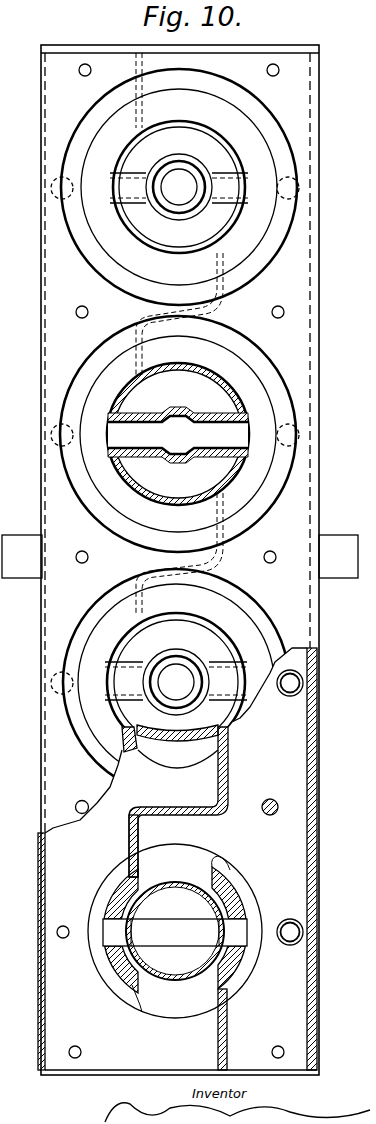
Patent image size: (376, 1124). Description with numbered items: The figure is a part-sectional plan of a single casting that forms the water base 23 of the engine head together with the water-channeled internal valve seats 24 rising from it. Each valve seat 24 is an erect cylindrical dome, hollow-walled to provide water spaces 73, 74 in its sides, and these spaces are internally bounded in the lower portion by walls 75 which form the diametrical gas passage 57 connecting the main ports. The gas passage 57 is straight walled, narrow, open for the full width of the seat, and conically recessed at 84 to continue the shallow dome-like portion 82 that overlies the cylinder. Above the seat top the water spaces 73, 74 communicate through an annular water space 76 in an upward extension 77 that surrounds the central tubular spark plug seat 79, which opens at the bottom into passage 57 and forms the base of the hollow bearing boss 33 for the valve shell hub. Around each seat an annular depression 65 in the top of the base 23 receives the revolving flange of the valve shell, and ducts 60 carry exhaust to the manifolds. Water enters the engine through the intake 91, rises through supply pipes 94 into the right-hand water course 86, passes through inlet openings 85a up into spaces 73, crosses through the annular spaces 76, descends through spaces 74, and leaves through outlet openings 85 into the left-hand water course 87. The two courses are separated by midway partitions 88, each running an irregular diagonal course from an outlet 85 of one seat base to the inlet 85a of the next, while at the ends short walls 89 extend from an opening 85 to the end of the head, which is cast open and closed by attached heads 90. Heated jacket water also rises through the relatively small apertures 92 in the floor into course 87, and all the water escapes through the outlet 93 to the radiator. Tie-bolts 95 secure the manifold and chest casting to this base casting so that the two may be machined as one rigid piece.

The water base 23 is at (313, 1035).
The valve seat 24 is at (240, 378).
The bearing boss 33 is at (199, 213).
The gas passage 57 is at (136, 203).
The exhaust duct 60 is at (110, 436).
The annular depression 65 is at (262, 104).
The water space 73 is at (244, 893).
The water space 74 is at (92, 984).
The wall 75 is at (222, 704).
The annular water space 76 is at (244, 183).
The upward extension 77 is at (118, 220).
The spark plug seat 79 is at (190, 172).
The dome-like portion 82 is at (124, 872).
The conical recess 84 is at (176, 881).
The water outlet opening 85 is at (128, 490).
The water inlet opening 85a is at (215, 858).
The right-hand water course 86 is at (310, 267).
The left-hand water course 87 is at (45, 299).
The midway partition 88 is at (133, 329).
The short wall 89 is at (136, 72).
The attached head 90 is at (180, 46).
The water intake 91 is at (342, 578).
The aperture 92 is at (62, 432).
The outlet 93 is at (22, 556).
The supply pipe 94 is at (286, 204).
The tie-bolt 95 is at (274, 814).